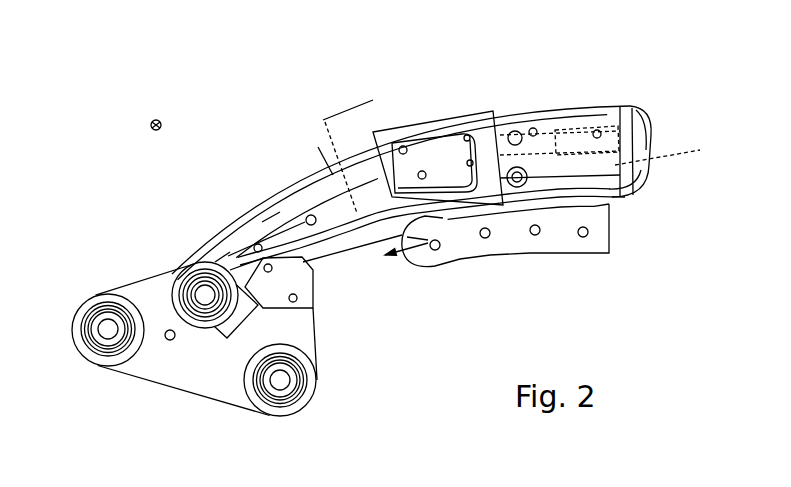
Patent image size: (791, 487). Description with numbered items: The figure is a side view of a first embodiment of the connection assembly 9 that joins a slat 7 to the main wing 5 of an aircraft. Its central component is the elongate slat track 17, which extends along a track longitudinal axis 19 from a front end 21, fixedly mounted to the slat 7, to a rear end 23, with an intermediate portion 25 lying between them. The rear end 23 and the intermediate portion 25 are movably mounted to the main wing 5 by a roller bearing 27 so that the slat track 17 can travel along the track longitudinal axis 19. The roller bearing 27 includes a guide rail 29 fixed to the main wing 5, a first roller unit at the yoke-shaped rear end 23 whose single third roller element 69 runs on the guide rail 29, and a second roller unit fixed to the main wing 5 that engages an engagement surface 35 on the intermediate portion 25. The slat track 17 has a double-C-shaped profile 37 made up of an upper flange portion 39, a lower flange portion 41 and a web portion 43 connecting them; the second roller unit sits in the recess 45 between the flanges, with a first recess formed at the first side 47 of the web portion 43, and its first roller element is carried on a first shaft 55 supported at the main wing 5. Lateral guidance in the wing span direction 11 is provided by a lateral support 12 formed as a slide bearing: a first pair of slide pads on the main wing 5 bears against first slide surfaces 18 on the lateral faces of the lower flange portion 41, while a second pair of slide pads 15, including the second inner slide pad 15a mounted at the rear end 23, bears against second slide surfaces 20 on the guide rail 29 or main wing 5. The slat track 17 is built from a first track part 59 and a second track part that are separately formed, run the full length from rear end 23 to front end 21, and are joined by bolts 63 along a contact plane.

The main wing 5 is at (657, 180).
The slat 7 is at (194, 355).
The connection assembly 9 is at (120, 158).
The wing span direction 11 is at (157, 119).
The lateral support 12 is at (302, 285).
The second pair of slide pads 15 is at (613, 100).
The second inner slide pad 15a is at (612, 135).
The slat track 17 is at (218, 228).
The first slide surfaces 18 is at (328, 257).
The track longitudinal axis 19 is at (135, 393).
The second slide surfaces 20 is at (543, 147).
The front end 21 is at (140, 292).
The rear end 23 is at (620, 185).
The intermediate portion 25 is at (327, 190).
The roller bearing 27 is at (178, 277).
The guide rail 29 is at (410, 127).
The engagement surface 35 is at (245, 290).
The double-C-shaped profile 37 is at (327, 117).
The upper flange portion 39 is at (327, 162).
The lower flange portion 41 is at (421, 220).
The web portion 43 is at (270, 222).
The recess 45 is at (258, 205).
The first side 47 is at (326, 220).
The first shaft 55 is at (205, 300).
The first track part 59 is at (222, 257).
The bolts 63 is at (308, 216).
The third roller element 69 is at (646, 148).